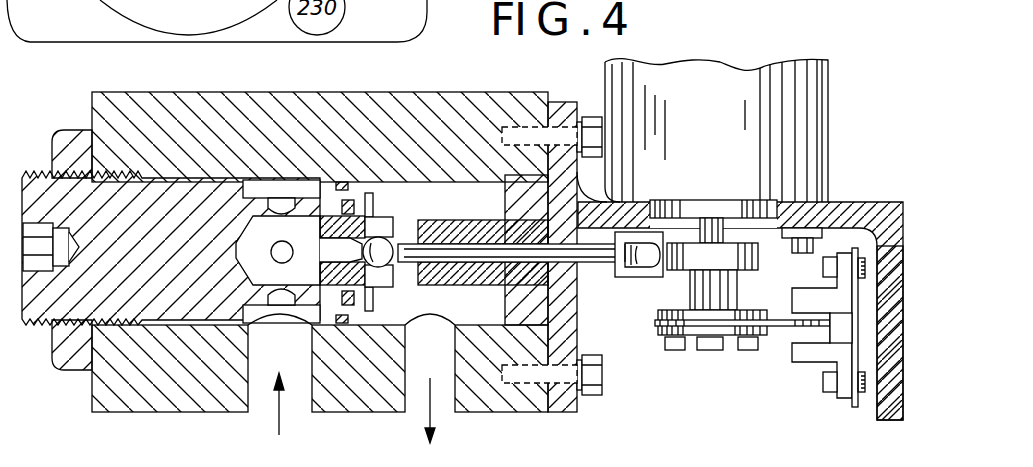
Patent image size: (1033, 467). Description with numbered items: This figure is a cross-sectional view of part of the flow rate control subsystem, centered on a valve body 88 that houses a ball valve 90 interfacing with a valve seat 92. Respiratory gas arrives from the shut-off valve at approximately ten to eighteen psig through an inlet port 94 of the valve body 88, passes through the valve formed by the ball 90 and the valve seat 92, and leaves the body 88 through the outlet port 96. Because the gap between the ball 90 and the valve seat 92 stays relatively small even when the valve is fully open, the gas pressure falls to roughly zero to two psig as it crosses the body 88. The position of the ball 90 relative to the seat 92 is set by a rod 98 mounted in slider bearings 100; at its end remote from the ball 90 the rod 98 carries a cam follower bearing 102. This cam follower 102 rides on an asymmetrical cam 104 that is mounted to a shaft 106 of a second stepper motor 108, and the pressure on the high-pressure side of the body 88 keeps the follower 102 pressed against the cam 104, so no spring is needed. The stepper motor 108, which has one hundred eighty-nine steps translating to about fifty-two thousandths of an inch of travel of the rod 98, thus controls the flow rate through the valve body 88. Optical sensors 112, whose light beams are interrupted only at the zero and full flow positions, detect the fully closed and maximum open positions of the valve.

The valve body 88 is at (449, 100).
The ball valve 90 is at (395, 236).
The valve seat 92 is at (381, 270).
The inlet port 94 is at (265, 403).
The outlet port 96 is at (442, 405).
The rod 98 is at (434, 250).
The slider bearings 100 is at (442, 270).
The cam follower bearing 102 is at (652, 272).
The asymmetrical cam 104 is at (715, 257).
The shaft 106 is at (722, 235).
The second stepper motor 108 is at (814, 102).
The optical sensors 112 is at (806, 355).